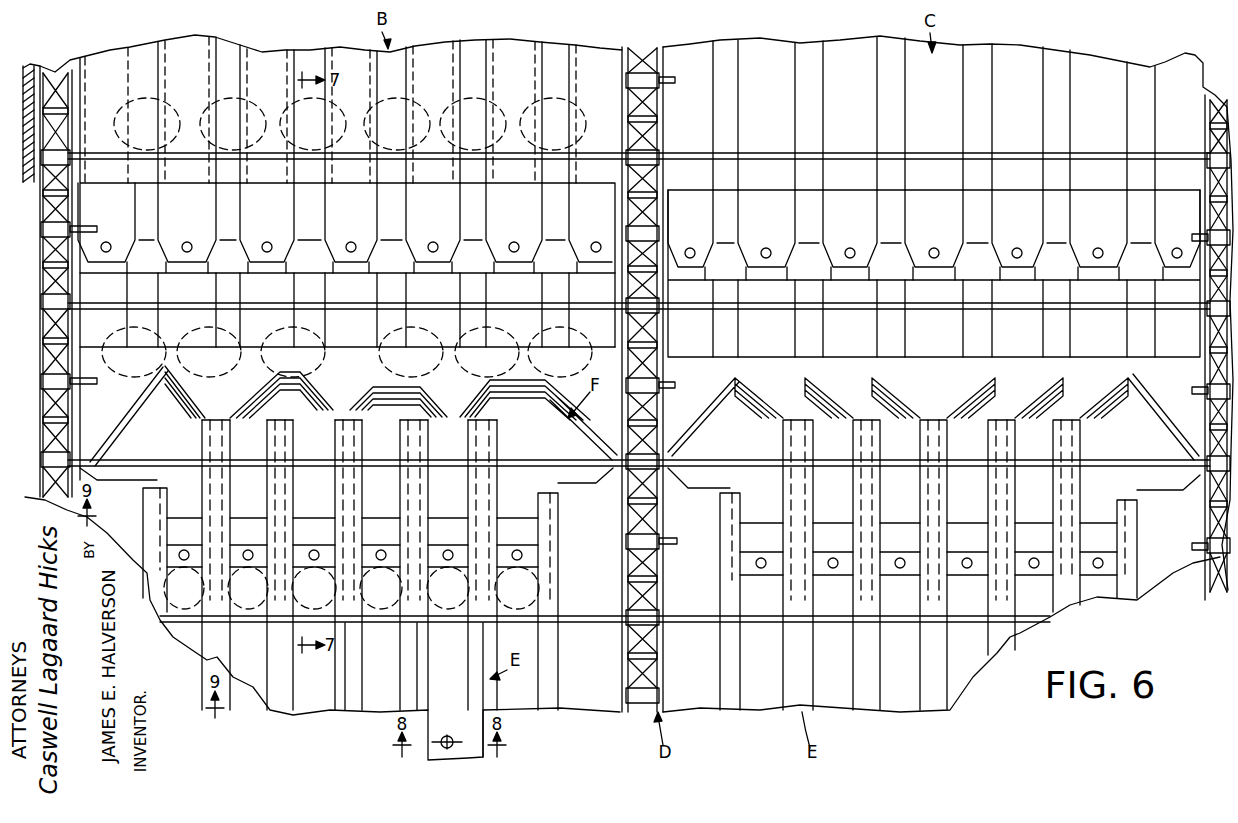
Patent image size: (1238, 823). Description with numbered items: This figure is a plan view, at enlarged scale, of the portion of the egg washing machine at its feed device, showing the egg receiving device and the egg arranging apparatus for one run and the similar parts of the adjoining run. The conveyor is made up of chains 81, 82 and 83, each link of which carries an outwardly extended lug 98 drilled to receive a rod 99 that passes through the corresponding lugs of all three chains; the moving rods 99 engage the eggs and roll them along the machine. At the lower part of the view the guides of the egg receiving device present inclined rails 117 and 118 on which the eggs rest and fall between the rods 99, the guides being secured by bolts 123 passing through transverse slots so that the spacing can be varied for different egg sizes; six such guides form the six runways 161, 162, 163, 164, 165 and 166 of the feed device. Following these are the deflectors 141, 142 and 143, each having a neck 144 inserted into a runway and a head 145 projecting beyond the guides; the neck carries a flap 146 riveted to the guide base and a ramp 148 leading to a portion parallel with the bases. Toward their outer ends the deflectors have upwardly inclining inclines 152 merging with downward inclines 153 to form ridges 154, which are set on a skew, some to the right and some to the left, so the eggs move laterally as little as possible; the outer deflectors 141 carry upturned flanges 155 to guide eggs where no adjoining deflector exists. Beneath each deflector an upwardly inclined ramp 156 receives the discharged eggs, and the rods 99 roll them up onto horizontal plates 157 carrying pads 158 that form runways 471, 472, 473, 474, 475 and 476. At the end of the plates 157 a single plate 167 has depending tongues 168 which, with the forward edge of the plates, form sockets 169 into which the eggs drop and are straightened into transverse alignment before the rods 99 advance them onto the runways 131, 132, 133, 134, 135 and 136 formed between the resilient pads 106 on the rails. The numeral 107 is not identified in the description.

The chain 81 is at (66, 80).
The chain 82 is at (1210, 108).
The chain 83 is at (654, 79).
The lug 98 is at (650, 310).
The rod 99 is at (605, 304).
The pad 106 is at (190, 62).
The upper panel 107 is at (550, 75).
The inclined rail 117 is at (357, 668).
The inclined rail 118 is at (381, 668).
The bolt 123 is at (447, 750).
The runway 131 is at (148, 168).
The runway 132 is at (230, 168).
The runway 133 is at (302, 175).
The runway 134 is at (397, 177).
The runway 135 is at (477, 177).
The runway 136 is at (558, 177).
The deflector 141 is at (196, 486).
The deflector 142 is at (268, 486).
The deflector 143 is at (337, 486).
The neck 144 is at (181, 477).
The head 145 is at (146, 470).
The flap 146 is at (235, 557).
The ramp 148 is at (180, 537).
The incline 152 is at (167, 385).
The incline 153 is at (178, 402).
The ridge 154 is at (147, 418).
The upturned flange 155 is at (115, 435).
The ramp 156 is at (347, 392).
The horizontal plate 157 is at (392, 289).
The pad 158 is at (123, 289).
The runway 161 is at (192, 630).
The runway 162 is at (256, 665).
The runway 163 is at (343, 715).
The runway 164 is at (382, 700).
The runway 165 is at (450, 640).
The runway 166 is at (525, 697).
The plate 167 is at (118, 242).
The tongue 168 is at (307, 249).
The socket 169 is at (158, 262).
The runway 471 is at (140, 316).
The runway 472 is at (228, 316).
The runway 473 is at (312, 316).
The runway 474 is at (388, 315).
The runway 475 is at (468, 316).
The runway 476 is at (560, 318).